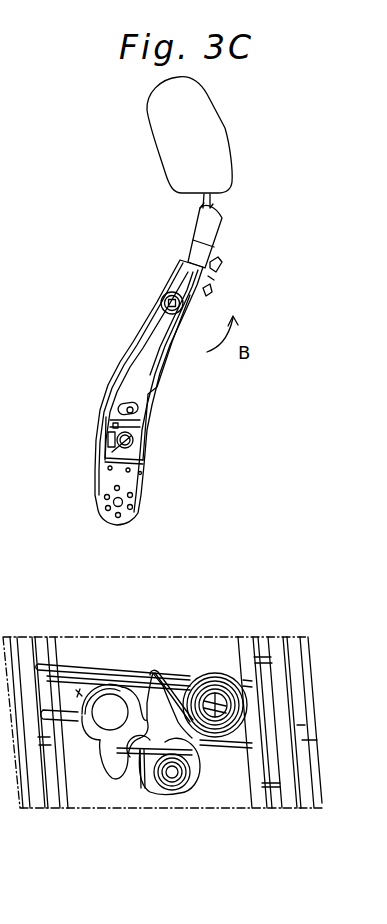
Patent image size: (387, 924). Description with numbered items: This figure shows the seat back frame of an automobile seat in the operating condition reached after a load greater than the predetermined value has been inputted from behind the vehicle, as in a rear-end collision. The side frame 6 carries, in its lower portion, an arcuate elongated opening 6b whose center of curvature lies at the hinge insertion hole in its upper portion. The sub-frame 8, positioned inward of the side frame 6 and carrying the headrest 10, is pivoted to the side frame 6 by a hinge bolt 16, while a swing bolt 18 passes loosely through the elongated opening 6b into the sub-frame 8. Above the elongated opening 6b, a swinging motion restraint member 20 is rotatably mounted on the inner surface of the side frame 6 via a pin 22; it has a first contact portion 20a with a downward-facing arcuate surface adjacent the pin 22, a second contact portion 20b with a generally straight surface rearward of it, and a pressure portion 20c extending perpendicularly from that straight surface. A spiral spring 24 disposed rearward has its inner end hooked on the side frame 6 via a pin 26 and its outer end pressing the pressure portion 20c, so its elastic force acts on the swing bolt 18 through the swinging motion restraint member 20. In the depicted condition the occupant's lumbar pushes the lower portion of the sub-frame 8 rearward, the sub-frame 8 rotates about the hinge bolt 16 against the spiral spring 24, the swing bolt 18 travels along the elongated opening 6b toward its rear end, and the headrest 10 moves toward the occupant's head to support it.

The side frame 6 is at (148, 357).
The elongated opening 6b is at (100, 438).
The sub-frame 8 is at (223, 237).
The headrest 10 is at (225, 132).
The hinge bolt 16 is at (163, 308).
The swing bolt 18 is at (113, 453).
The swinging motion restraint member 20 is at (78, 693).
The first contact portion 20a is at (148, 703).
The second contact portion 20b is at (137, 748).
The pressure portion 20c is at (183, 673).
The pin 22 is at (108, 712).
The spiral spring 24 is at (233, 671).
The pin 26 is at (237, 735).